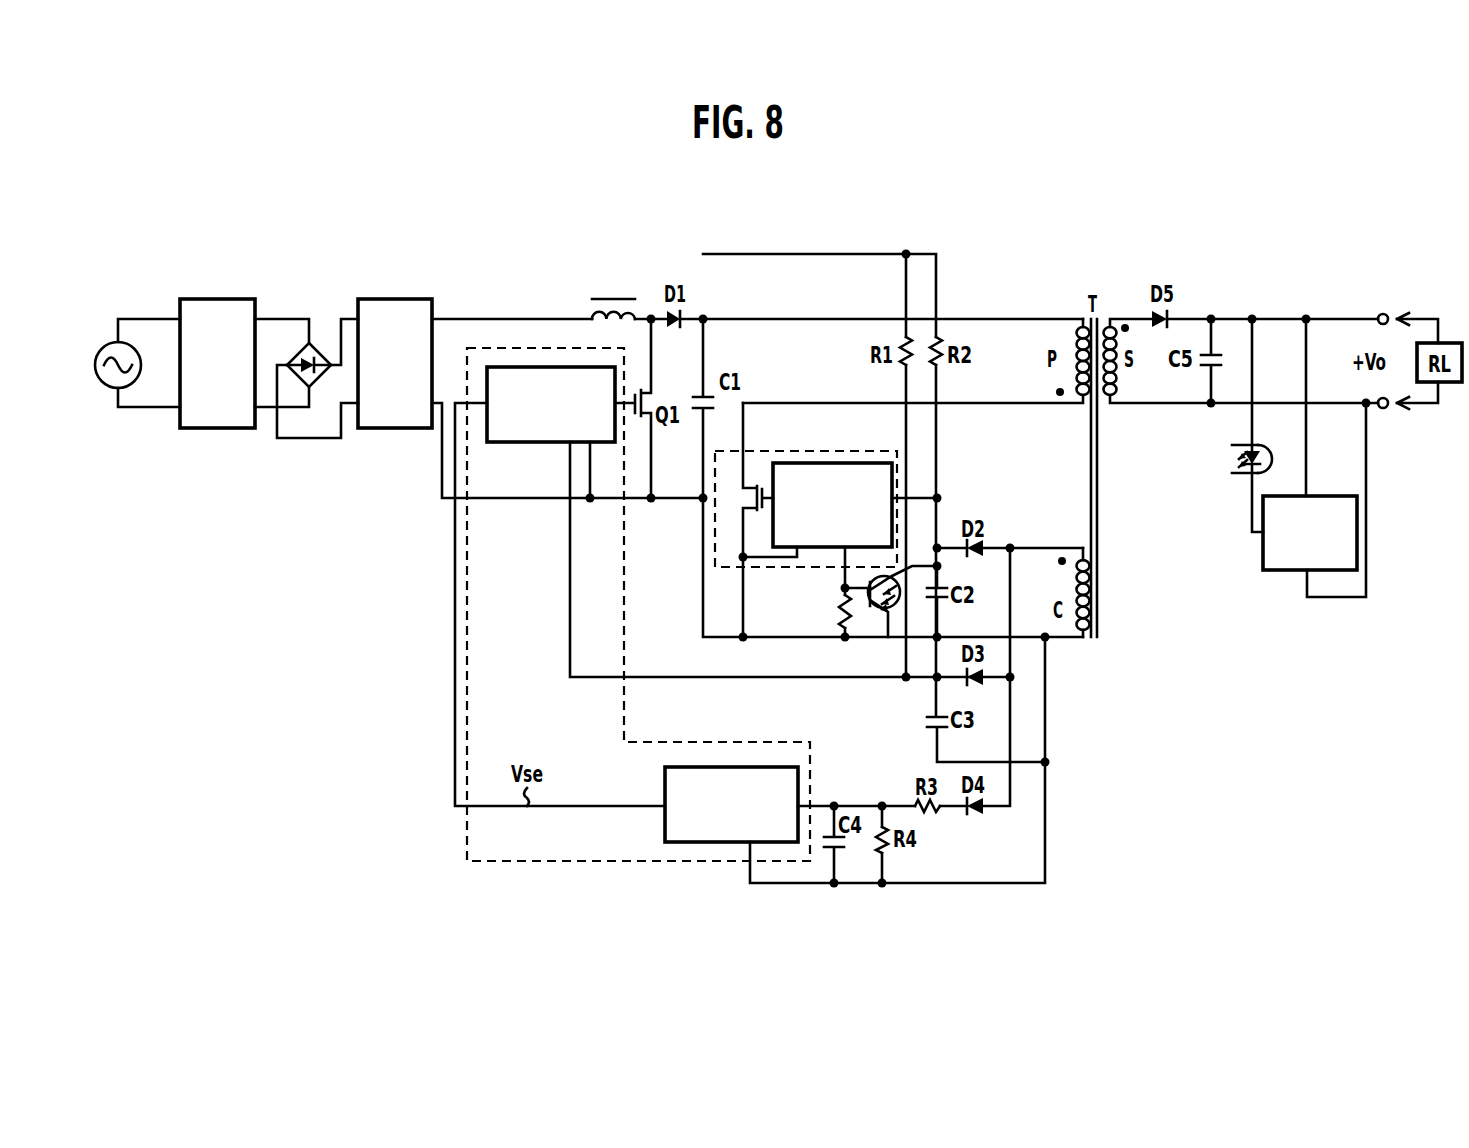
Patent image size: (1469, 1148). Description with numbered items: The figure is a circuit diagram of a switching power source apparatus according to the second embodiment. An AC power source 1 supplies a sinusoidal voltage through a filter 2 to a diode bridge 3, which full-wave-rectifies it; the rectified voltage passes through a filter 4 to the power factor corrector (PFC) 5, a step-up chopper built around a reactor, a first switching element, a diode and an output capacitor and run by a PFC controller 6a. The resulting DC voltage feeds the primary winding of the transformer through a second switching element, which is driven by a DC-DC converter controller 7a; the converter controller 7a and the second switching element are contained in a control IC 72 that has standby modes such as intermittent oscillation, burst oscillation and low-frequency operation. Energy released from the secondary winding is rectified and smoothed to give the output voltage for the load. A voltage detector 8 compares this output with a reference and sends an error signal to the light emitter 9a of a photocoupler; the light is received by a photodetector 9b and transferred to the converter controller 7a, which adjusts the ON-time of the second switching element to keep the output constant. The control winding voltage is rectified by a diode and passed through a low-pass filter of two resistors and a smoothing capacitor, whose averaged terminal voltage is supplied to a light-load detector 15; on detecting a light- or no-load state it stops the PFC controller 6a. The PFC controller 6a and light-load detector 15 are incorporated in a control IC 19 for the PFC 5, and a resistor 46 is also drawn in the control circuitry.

The AC power source 1 is at (108, 386).
The filter 2 is at (225, 299).
The diode bridge 3 is at (316, 347).
The filter 4 is at (408, 299).
The power factor corrector (PFC) 5 is at (588, 282).
The PFC controller 6a is at (541, 444).
The DC-DC converter controller 7a is at (846, 463).
The voltage detector 8 is at (1274, 572).
The light emitter 9a is at (1242, 478).
The photodetector 9b is at (884, 618).
The light-load detector 15 is at (665, 782).
The control IC 19 is at (467, 847).
The resistor 46 is at (838, 602).
The control IC 72 is at (802, 522).